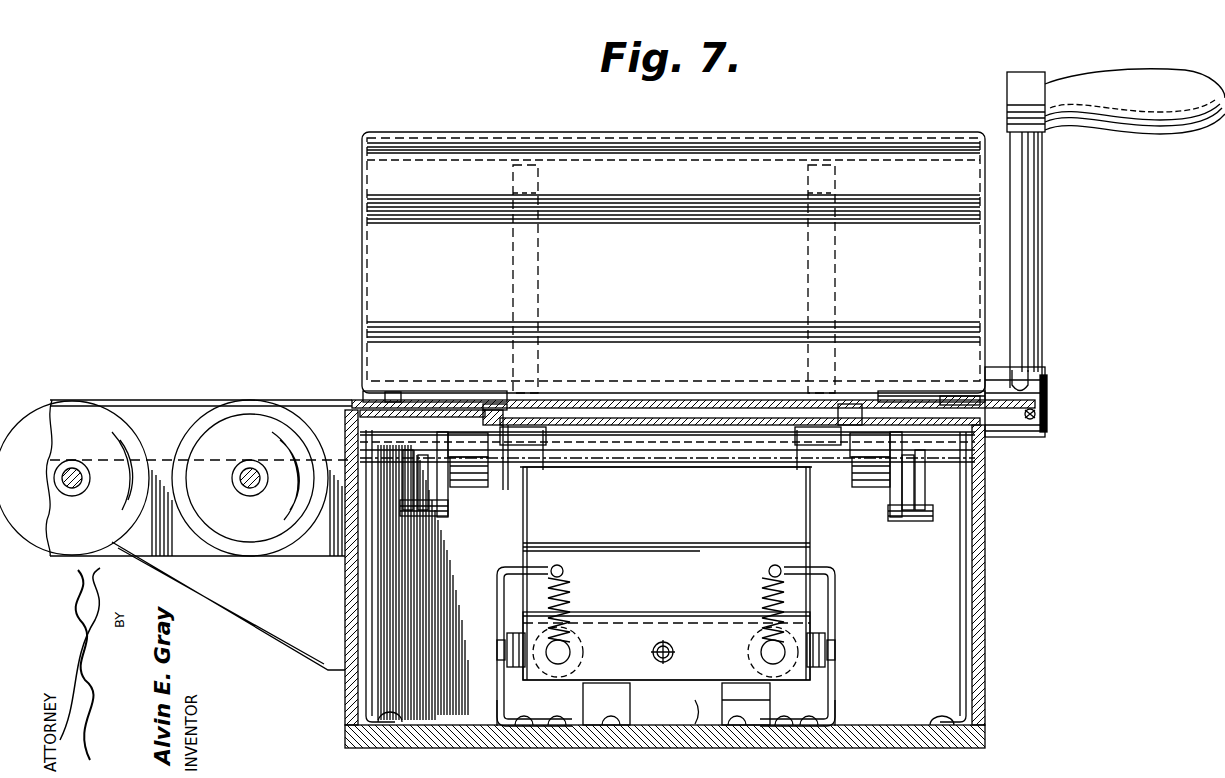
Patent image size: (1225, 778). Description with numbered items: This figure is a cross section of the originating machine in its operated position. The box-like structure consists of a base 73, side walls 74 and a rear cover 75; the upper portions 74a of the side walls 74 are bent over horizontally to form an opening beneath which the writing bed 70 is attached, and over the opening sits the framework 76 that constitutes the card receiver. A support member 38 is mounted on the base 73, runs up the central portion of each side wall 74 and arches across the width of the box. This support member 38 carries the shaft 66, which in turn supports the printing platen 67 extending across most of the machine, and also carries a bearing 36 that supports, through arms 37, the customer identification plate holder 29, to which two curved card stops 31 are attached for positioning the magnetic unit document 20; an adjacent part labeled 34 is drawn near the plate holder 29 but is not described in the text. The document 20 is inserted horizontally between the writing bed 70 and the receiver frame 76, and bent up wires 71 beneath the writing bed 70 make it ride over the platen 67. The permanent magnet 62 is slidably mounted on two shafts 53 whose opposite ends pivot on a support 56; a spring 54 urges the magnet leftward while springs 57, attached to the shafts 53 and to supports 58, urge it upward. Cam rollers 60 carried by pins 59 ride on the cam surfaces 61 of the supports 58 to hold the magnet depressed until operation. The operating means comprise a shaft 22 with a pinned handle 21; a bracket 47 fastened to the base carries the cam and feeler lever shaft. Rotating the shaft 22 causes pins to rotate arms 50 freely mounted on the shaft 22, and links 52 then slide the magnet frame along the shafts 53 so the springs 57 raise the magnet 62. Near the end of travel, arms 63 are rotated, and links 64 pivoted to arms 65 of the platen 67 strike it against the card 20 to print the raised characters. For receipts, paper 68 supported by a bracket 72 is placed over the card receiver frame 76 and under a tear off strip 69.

The magnetic unit document 20 is at (614, 400).
The handle 21 is at (1128, 76).
The shaft 22 is at (1048, 400).
The customer identification plate holder 29 is at (748, 393).
The curved card stops 31 is at (540, 284).
The bearing bracket 34 is at (452, 470).
The bearing 36 is at (393, 392).
The arms 37 is at (430, 394).
The support member 38 is at (705, 382).
The bracket 47 is at (628, 696).
The arms 50 is at (522, 535).
The links 52 is at (510, 676).
The shafts 53 is at (572, 651).
The spring 54 is at (672, 644).
The support 56 is at (666, 706).
The springs 57 is at (572, 594).
The supports 58 is at (497, 600).
The pins 59 is at (497, 648).
The cam rollers 60 is at (507, 660).
The cam surface 61 is at (648, 614).
The permanent magnet 62 is at (678, 535).
The arms 63 is at (405, 478).
The links 64 is at (420, 512).
The arms 65 is at (438, 516).
The shaft 66 is at (706, 458).
The printing platen 67 is at (506, 445).
The paper 68 is at (156, 400).
The tear off strip 69 is at (950, 395).
The writing bed 70 is at (618, 428).
The bent up wires 71 is at (545, 445).
The bracket 72 is at (262, 606).
The base 73 is at (510, 748).
The side walls 74 is at (360, 570).
The bent over portion of side walls 74a is at (405, 412).
The rear cover 75 is at (750, 131).
The framework 76 is at (492, 404).